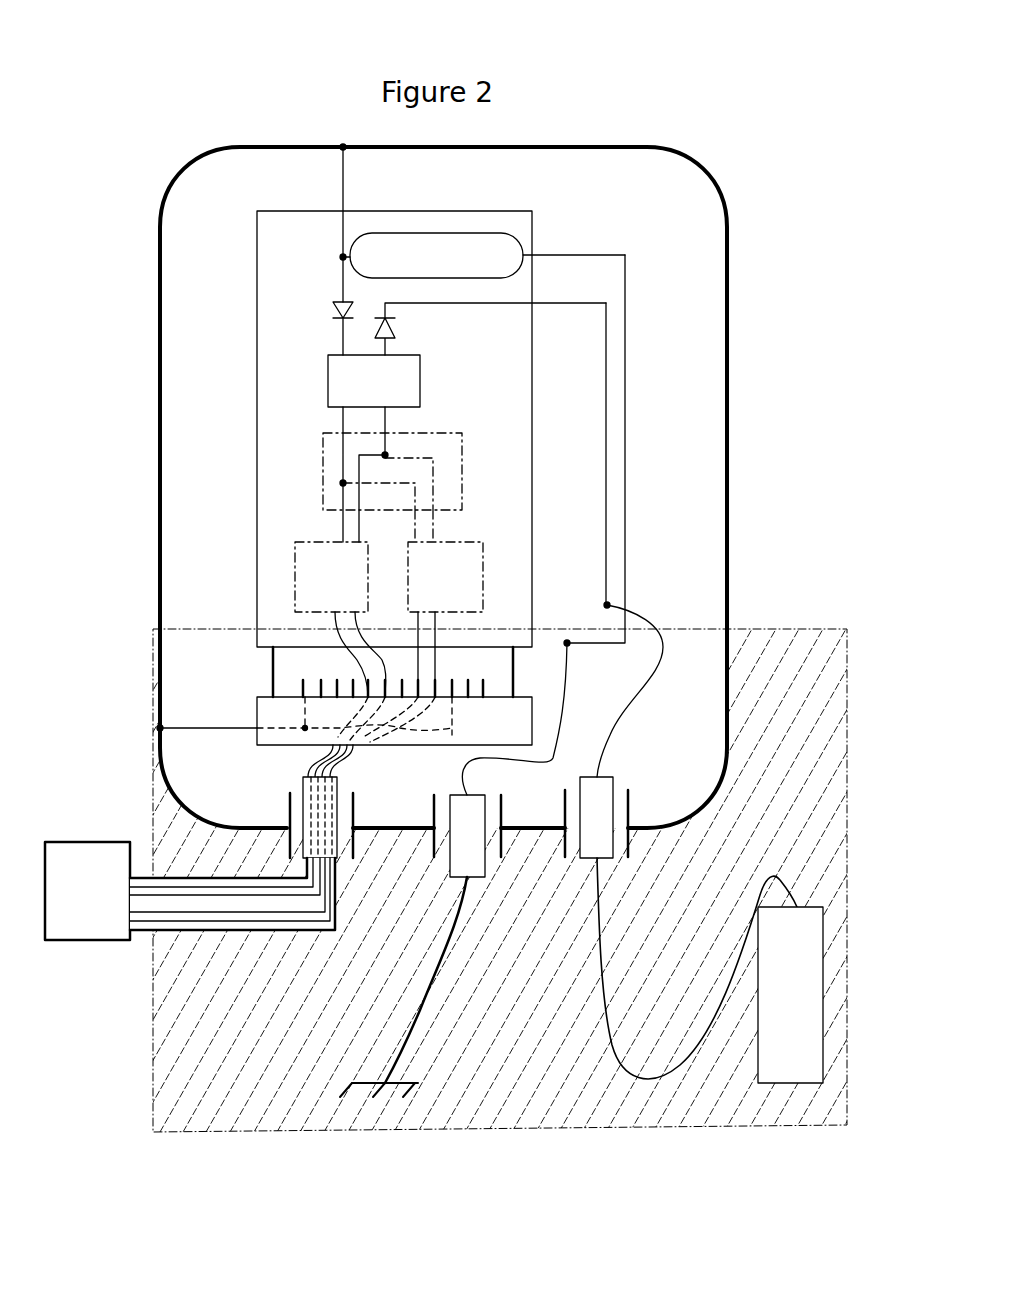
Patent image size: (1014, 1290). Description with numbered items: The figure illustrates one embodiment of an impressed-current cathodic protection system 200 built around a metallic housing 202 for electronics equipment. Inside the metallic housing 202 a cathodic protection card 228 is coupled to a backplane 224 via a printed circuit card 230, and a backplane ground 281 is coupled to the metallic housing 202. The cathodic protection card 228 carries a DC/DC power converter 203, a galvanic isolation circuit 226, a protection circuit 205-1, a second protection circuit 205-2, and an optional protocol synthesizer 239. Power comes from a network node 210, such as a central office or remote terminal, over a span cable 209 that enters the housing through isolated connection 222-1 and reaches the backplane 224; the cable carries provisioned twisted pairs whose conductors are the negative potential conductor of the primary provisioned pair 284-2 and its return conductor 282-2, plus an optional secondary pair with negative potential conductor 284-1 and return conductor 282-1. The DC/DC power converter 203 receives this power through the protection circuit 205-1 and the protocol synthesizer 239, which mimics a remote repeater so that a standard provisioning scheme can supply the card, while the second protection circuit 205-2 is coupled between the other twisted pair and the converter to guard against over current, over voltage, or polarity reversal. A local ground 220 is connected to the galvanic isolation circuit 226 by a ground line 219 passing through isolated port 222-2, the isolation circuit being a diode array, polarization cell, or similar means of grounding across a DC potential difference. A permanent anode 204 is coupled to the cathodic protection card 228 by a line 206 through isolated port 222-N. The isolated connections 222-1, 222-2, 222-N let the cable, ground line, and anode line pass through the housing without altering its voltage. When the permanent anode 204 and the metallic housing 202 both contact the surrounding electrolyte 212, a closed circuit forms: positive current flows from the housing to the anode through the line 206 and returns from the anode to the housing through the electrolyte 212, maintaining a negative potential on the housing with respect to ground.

The impressed-current cathodic protection system 200 is at (754, 217).
The metallic housing 202 is at (157, 354).
The DC/DC power converter 203 is at (380, 395).
The permanent anode 204 is at (841, 936).
The protection circuit 205-1 is at (340, 590).
The second protection circuit 205-2 is at (458, 590).
The line 206 is at (649, 614).
The cable 209 is at (255, 928).
The network node 210 is at (79, 823).
The electrolyte 212 is at (851, 1062).
The ground line 219 is at (437, 1006).
The local ground 220 is at (336, 1082).
The isolated connection 222-1 is at (341, 864).
The isolated port 222-2 is at (430, 864).
The isolated port 222-N is at (635, 777).
The backplane 224 is at (236, 712).
The galvanic isolation circuit 226 is at (446, 267).
The cathodic protection card 228 is at (256, 463).
The printed circuit card 230 is at (255, 661).
The protocol synthesizer 239 is at (462, 470).
The backplane ground 281 is at (455, 715).
The return conductor of the secondary provisioned pair 282-1 is at (148, 932).
The return conductor of the primary provisioned pair 282-2 is at (210, 886).
The negative potential conductor of the secondary provisioned pair 284-1 is at (175, 932).
The negative potential conductor of the primary provisioned pair 284-2 is at (168, 880).